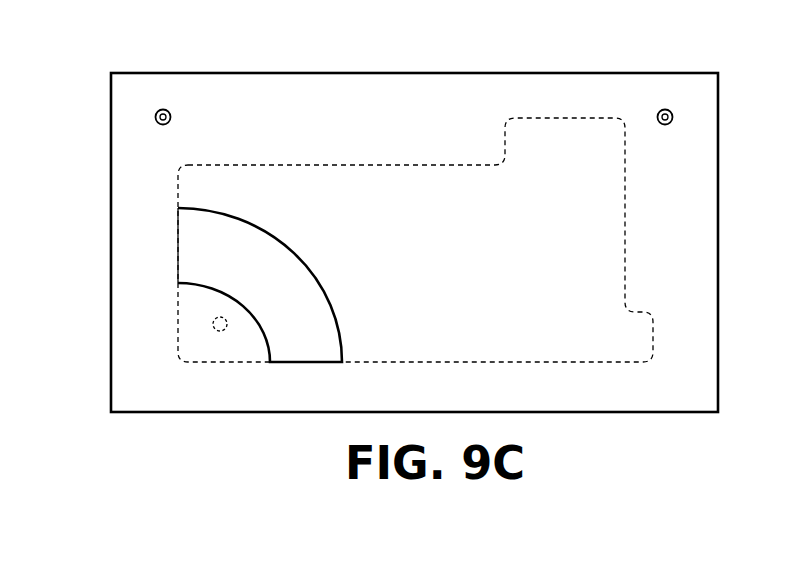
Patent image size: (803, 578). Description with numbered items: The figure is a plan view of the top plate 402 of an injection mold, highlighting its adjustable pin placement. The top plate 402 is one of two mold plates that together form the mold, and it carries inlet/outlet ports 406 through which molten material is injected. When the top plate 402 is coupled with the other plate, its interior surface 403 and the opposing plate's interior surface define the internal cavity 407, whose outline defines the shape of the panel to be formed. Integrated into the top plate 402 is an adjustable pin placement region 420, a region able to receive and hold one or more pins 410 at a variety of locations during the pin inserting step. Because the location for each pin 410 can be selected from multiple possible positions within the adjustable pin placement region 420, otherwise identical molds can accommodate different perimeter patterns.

The top plate 402 is at (111, 73).
The interior surface 403 is at (246, 340).
The inlet/outlet ports 406 is at (167, 108).
The internal cavity 407 is at (436, 266).
The pins 410 is at (212, 320).
The adjustable pin placement region 420 is at (274, 286).